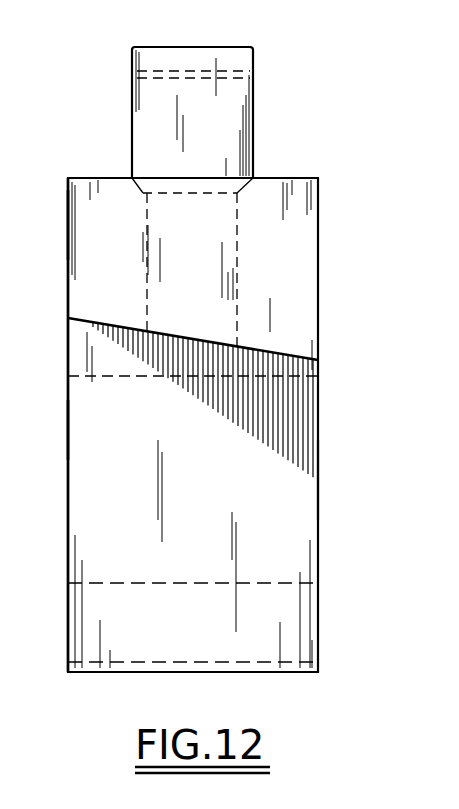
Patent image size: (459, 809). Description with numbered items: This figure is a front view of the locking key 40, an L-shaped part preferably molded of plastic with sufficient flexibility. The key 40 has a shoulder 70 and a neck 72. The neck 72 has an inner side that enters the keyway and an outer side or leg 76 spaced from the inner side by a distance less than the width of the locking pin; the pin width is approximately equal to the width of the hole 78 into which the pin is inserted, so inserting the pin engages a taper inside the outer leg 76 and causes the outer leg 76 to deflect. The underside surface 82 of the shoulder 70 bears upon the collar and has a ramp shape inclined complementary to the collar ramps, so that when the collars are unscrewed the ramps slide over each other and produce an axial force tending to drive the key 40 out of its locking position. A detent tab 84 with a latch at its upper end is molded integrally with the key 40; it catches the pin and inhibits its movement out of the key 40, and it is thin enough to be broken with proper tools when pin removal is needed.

The key 40 is at (327, 328).
The shoulder 70 is at (68, 209).
The neck 72 is at (75, 430).
The outer leg 76 is at (320, 494).
The hole 78 is at (237, 263).
The underside surface 82 is at (88, 323).
The detent tab 84 is at (238, 104).